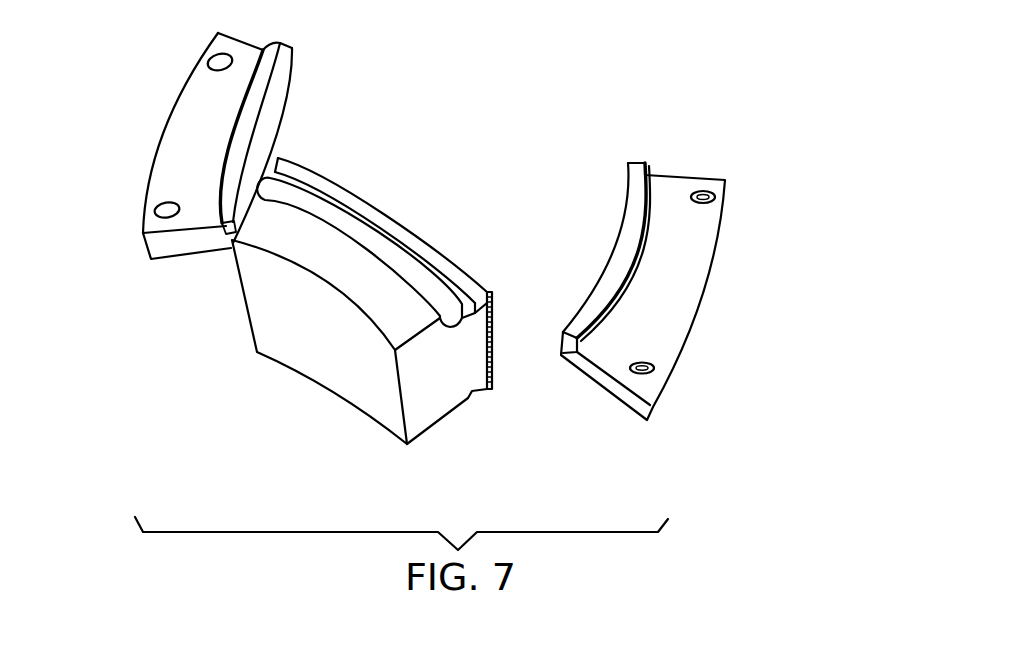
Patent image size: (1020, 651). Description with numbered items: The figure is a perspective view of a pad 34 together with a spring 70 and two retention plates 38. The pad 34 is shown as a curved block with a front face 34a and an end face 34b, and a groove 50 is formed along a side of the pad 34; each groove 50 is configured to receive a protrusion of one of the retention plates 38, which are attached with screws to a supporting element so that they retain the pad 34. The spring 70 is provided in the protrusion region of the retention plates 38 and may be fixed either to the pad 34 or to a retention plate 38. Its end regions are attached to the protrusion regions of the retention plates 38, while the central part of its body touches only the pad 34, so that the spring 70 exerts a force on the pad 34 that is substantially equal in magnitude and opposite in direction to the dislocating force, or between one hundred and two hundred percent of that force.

The pad 34 is at (346, 265).
The front face of segment 34a is at (283, 305).
The serrated end face of segment 34b is at (490, 333).
The retention plate 38 is at (187, 145).
The groove 50 is at (357, 237).
The spring 70 is at (283, 190).